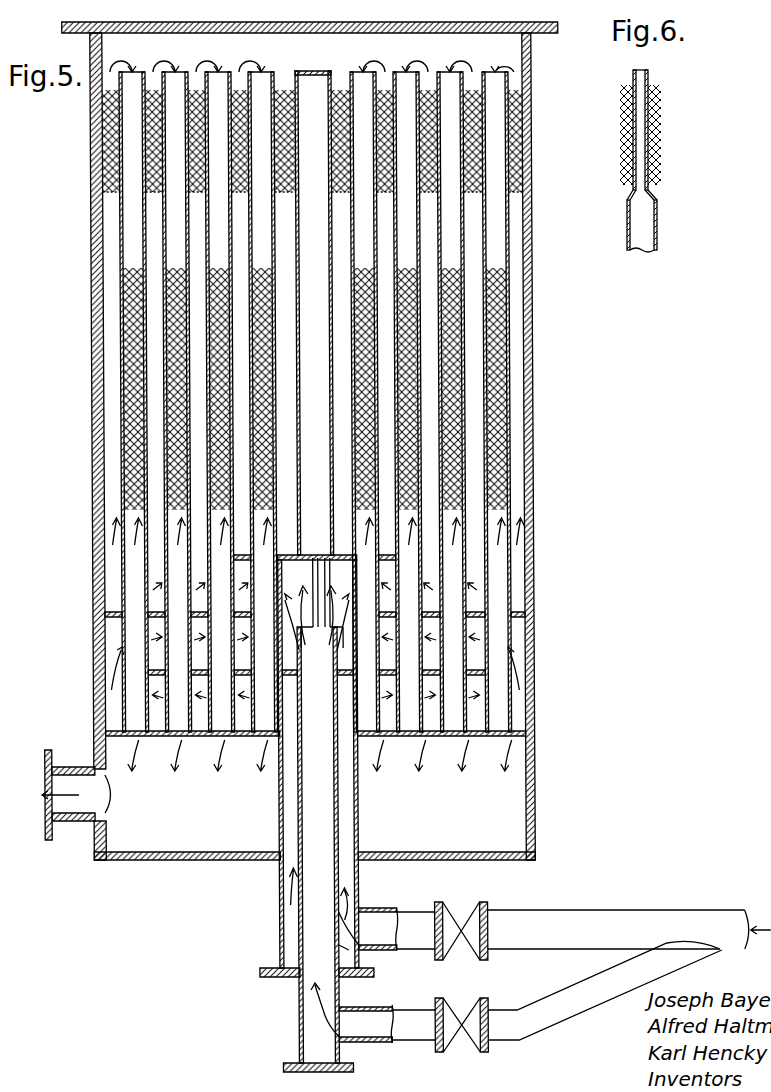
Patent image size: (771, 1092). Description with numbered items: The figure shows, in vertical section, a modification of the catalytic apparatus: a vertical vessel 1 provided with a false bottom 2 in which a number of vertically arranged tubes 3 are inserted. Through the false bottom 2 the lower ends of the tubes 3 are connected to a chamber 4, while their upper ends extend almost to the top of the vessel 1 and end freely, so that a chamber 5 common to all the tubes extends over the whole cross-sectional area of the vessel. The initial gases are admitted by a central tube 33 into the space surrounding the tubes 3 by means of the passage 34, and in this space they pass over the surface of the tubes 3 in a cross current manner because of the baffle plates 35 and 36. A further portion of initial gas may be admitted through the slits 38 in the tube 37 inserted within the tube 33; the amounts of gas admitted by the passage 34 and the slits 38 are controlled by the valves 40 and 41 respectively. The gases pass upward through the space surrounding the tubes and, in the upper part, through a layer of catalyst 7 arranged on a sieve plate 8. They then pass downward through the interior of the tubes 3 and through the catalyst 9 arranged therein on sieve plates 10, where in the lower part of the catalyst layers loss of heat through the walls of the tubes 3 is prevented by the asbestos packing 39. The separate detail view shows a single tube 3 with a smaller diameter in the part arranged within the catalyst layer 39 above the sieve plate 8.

In FIG. 5, the vessel 1 is at (100, 283).
In FIG. 5, the false bottom 2 is at (516, 735).
In FIG. 5, the tubes 3 is at (119, 572).
In FIG. 6, the tubes 3 is at (655, 228).
In FIG. 5, the chamber 4 is at (277, 790).
In FIG. 5, the chamber 5 is at (462, 63).
In FIG. 5, the layer of catalyst 7 is at (110, 126).
In FIG. 6, the layer of catalyst 7 is at (630, 112).
In FIG. 5, the sieve plate 8 is at (108, 194).
In FIG. 6, the sieve plate 8 is at (628, 188).
In FIG. 5, the catalyst 9 is at (502, 310).
In FIG. 5, the sieve plates 10 is at (503, 516).
In FIG. 5, the central tube 33 is at (347, 899).
In FIG. 5, the passage 34 is at (340, 733).
In FIG. 5, the baffle plates 35 is at (402, 676).
In FIG. 5, the baffle plates 36 is at (474, 609).
In FIG. 5, the tube 37 is at (336, 866).
In FIG. 5, the slits 38 is at (316, 583).
In FIG. 5, the asbestos packing 39 is at (501, 453).
In FIG. 5, the valve 40 is at (603, 929).
In FIG. 5, the valve 41 is at (523, 996).